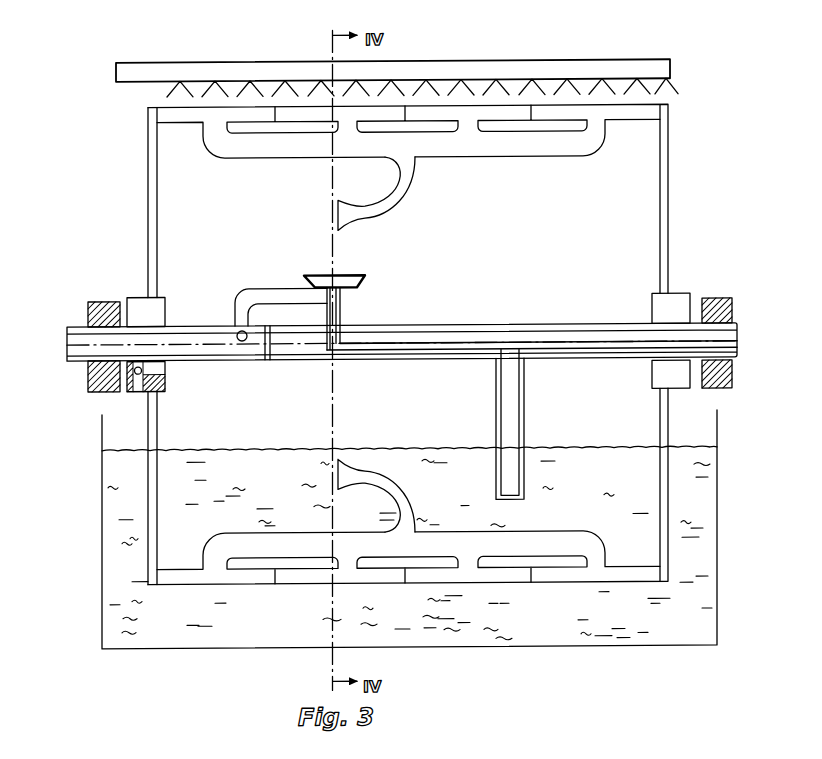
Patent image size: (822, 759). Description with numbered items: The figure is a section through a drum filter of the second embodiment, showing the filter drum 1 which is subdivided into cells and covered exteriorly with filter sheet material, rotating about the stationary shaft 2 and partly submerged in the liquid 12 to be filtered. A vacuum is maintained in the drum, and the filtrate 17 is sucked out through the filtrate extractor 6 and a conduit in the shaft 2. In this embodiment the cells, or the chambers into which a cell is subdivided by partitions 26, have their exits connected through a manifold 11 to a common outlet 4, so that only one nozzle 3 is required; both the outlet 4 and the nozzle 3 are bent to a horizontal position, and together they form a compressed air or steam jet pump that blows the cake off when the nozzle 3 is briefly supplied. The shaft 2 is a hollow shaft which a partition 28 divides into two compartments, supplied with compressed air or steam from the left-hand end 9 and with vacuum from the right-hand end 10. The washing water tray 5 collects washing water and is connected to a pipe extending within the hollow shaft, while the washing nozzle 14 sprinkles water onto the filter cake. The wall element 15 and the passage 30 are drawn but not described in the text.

The filter drum 1 is at (673, 104).
The stationary shaft 2 is at (458, 322).
The nozzle 3 is at (326, 297).
The filtrate outlet 4 is at (402, 196).
The washing water tray 5 is at (363, 285).
The filtrate extractor 6 is at (523, 425).
The left-hand end 9 is at (70, 359).
The right-hand end 10 is at (670, 332).
The manifold 11 is at (535, 150).
The liquid to be filtered 12 is at (290, 627).
The washing nozzle 14 is at (167, 89).
The housing wall 15 is at (168, 118).
The filtrate 17 is at (262, 480).
The partitions 26 is at (407, 113).
The partition 28 is at (266, 322).
The axial bore 30 is at (370, 342).